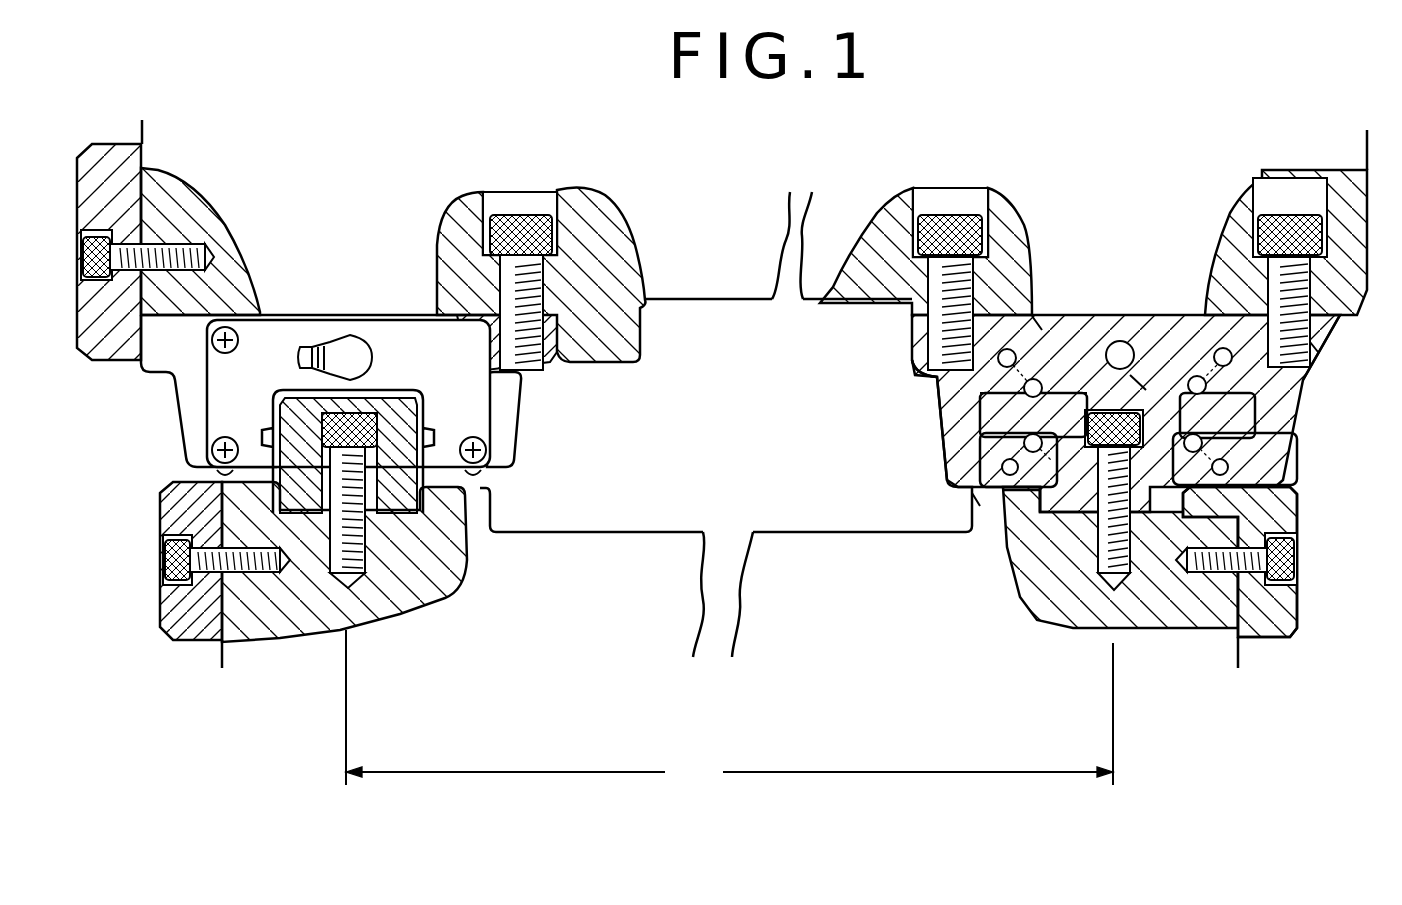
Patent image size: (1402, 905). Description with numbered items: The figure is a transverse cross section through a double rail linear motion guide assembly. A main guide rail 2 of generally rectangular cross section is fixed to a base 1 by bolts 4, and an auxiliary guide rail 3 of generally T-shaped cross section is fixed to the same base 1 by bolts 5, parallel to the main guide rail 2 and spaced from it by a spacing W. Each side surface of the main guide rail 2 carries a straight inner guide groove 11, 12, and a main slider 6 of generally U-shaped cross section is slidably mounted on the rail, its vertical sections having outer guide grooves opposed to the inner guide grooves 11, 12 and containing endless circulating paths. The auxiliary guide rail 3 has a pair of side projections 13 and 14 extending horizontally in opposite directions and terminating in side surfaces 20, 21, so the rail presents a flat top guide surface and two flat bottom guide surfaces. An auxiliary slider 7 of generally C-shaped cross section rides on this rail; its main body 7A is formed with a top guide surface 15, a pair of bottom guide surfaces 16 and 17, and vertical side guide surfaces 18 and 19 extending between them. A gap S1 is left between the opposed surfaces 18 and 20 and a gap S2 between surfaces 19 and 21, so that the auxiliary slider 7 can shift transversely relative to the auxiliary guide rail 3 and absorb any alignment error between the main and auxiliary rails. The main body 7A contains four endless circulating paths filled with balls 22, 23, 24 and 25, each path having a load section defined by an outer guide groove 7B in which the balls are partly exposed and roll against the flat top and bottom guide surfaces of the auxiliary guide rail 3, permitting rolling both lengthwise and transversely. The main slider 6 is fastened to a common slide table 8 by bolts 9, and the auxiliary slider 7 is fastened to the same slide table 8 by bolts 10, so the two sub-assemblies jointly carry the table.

The base 1 is at (532, 530).
The main guide rail 2 is at (397, 505).
The auxiliary guide rail 3 is at (1025, 595).
The bolts 4 is at (333, 545).
The bolts 5 is at (1095, 590).
The main slider 6 is at (175, 393).
The auxiliary slider 7 is at (1088, 335).
The main body 7A is at (1122, 340).
The outer guide groove 7B is at (1042, 322).
The common slide table 8 is at (568, 230).
The bolts 9 is at (525, 215).
The bolts 10 is at (950, 217).
The inner guide groove 11 is at (424, 420).
The inner guide groove 12 is at (280, 432).
The side projection 13 is at (1000, 442).
The side projection 14 is at (1235, 420).
The top guide surface 15 is at (1138, 378).
The bottom guide surface 16 is at (985, 479).
The bottom guide surface 17 is at (1280, 470).
The side guide surface 18 is at (938, 392).
The side guide surface 19 is at (1303, 385).
The side surface 20 is at (997, 424).
The side surface 21 is at (1280, 440).
The ball 22 is at (1033, 379).
The ball 23 is at (1195, 376).
The ball 24 is at (1170, 565).
The ball 25 is at (1012, 522).
The gap S1 is at (980, 405).
The gap S2 is at (1300, 400).
The spacing W is at (729, 710).